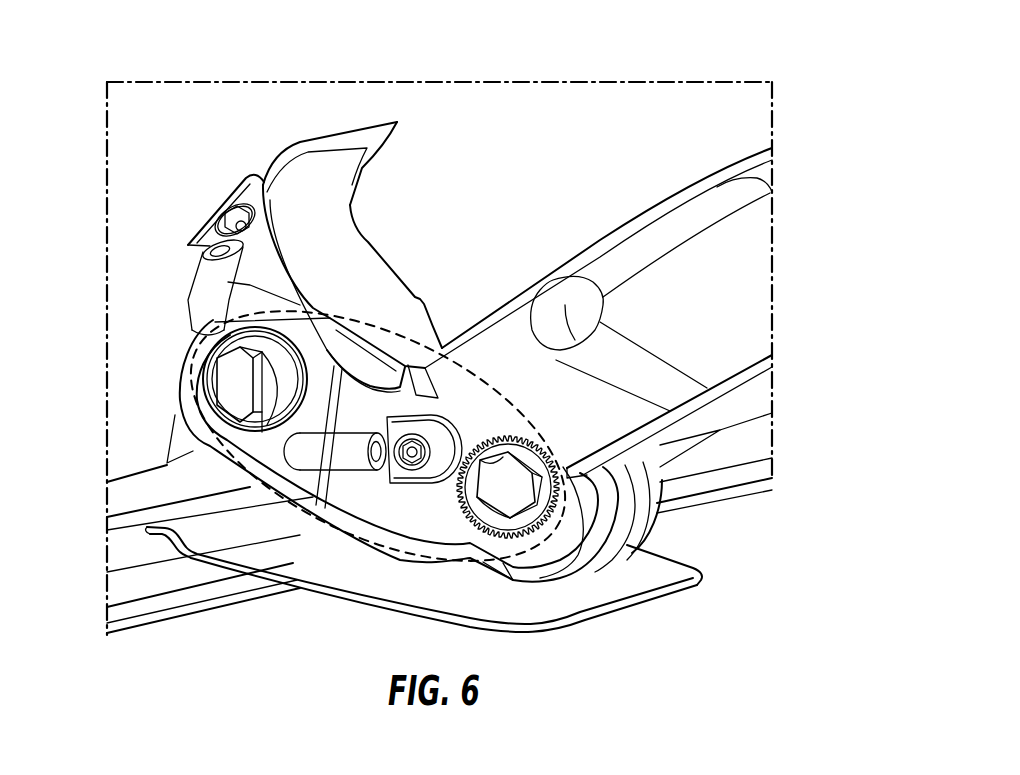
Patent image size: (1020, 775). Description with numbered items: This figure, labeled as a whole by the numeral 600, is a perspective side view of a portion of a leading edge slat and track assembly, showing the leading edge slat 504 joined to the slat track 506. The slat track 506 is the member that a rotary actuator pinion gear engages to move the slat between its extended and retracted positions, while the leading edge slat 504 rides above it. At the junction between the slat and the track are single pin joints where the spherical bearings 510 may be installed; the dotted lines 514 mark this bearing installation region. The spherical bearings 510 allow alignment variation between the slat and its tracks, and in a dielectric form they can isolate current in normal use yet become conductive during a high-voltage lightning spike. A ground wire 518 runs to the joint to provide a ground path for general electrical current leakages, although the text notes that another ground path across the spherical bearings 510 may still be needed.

The slat track assembly 600 is at (135, 53).
The leading edge slat 504 is at (636, 96).
The slat track 506 is at (751, 250).
The spherical bearings 510 is at (232, 388).
The dotted lines 514 is at (410, 338).
The ground wire 518 is at (192, 418).